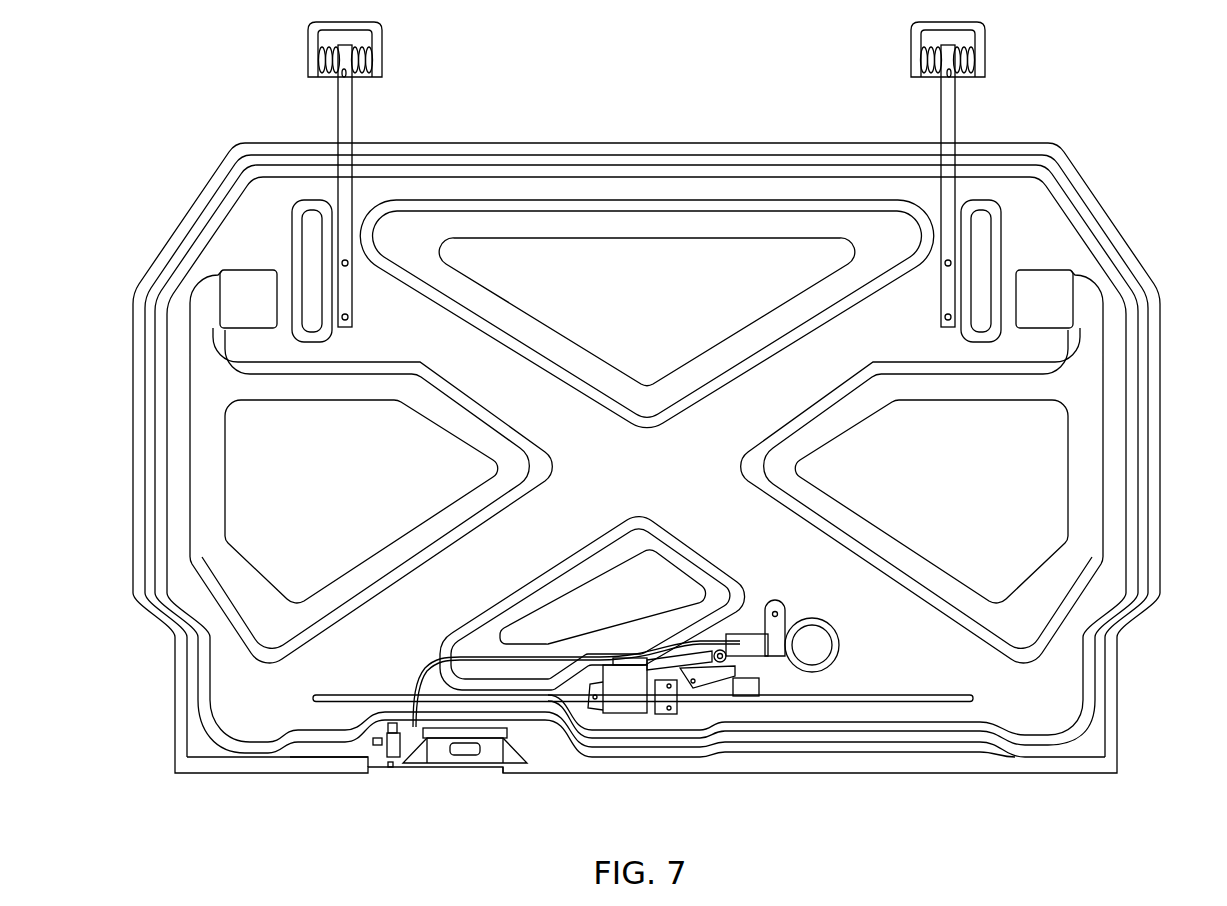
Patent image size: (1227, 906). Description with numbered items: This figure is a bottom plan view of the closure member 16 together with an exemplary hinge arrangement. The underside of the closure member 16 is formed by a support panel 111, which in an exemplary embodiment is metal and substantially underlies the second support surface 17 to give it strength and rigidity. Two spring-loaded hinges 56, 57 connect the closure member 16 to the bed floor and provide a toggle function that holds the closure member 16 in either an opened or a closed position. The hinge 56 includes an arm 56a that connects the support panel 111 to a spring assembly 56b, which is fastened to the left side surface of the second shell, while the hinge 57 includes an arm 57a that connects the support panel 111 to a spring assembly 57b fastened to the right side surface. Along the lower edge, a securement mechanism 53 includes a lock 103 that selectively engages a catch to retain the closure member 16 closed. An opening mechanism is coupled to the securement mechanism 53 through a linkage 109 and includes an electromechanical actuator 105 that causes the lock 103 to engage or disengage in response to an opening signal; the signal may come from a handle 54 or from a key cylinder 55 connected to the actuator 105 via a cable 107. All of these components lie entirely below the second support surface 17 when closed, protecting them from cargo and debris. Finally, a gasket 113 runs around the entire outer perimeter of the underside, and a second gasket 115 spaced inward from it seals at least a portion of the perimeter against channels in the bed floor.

The closure member 16 is at (116, 430).
The second support surface 17 is at (538, 777).
The securement mechanism 53 is at (564, 700).
The handle 54 is at (445, 760).
The key cylinder 55 is at (375, 756).
The hinge 56 is at (877, 174).
The arm 56a is at (925, 105).
The spring assembly 56b is at (903, 57).
The hinge 57 is at (410, 174).
The arm 57a is at (368, 105).
The spring assembly 57b is at (390, 57).
The lock 103 is at (636, 723).
The electromechanical actuator 105 is at (764, 613).
The cable 107 is at (566, 649).
The linkage 109 is at (679, 676).
The support panel 111 is at (881, 342).
The gasket 113 is at (1147, 346).
The gasket 115 is at (1158, 398).